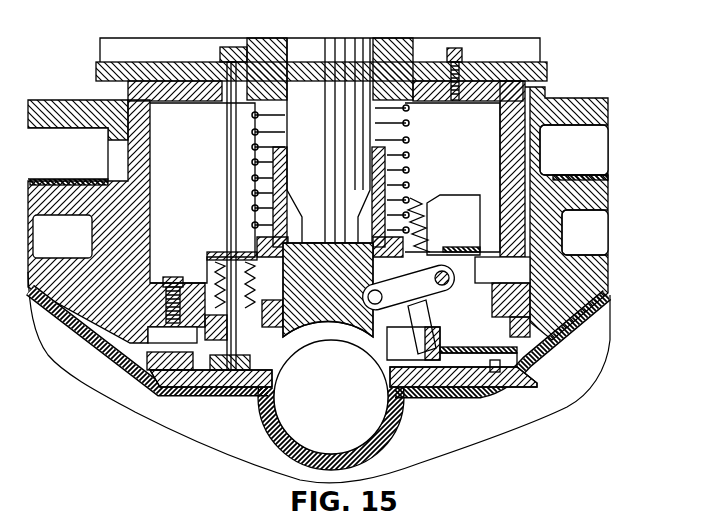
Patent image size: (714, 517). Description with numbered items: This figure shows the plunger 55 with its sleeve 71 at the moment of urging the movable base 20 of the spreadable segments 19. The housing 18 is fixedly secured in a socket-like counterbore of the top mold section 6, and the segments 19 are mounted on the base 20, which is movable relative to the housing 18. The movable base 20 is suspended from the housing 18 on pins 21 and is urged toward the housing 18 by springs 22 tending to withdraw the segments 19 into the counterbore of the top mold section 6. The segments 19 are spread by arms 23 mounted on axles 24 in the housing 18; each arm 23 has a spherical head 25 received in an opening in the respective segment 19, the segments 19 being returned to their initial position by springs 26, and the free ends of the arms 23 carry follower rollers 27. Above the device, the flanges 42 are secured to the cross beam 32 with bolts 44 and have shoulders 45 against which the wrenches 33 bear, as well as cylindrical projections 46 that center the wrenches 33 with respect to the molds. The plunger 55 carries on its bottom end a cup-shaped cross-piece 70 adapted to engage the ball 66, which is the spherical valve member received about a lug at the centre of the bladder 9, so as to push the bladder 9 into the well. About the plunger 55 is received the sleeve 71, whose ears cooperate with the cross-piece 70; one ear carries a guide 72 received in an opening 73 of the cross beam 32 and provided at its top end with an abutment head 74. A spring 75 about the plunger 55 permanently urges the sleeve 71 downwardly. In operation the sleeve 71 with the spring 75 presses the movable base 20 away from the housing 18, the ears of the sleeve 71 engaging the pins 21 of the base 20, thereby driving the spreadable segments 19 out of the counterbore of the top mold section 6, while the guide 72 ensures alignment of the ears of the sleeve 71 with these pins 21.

The top mold section 6 is at (77, 215).
The bladder 9 is at (158, 395).
The housing 18 is at (112, 355).
The spreadable segments 19 is at (530, 366).
The movable base 20 is at (257, 380).
The pins 21 is at (221, 277).
The springs 22 is at (252, 284).
The arms 23 is at (440, 298).
The axles 24 is at (450, 278).
The spherical head 25 is at (397, 345).
The springs 26 is at (425, 217).
The follower rollers 27 is at (409, 287).
The cross beam 32 is at (545, 68).
The wrenches 33 is at (60, 110).
The flanges 42 is at (502, 102).
The bolts 44 is at (456, 47).
The shoulders 45 is at (118, 160).
The cylindrical projections 46 is at (152, 232).
The plunger 55 is at (311, 46).
The ball 66 is at (302, 435).
The cross-piece 70 is at (306, 335).
The sleeve 71 is at (399, 189).
The guide 72 is at (226, 161).
The opening 73 is at (226, 108).
The abutment head 74 is at (230, 46).
The spring 75 is at (407, 120).